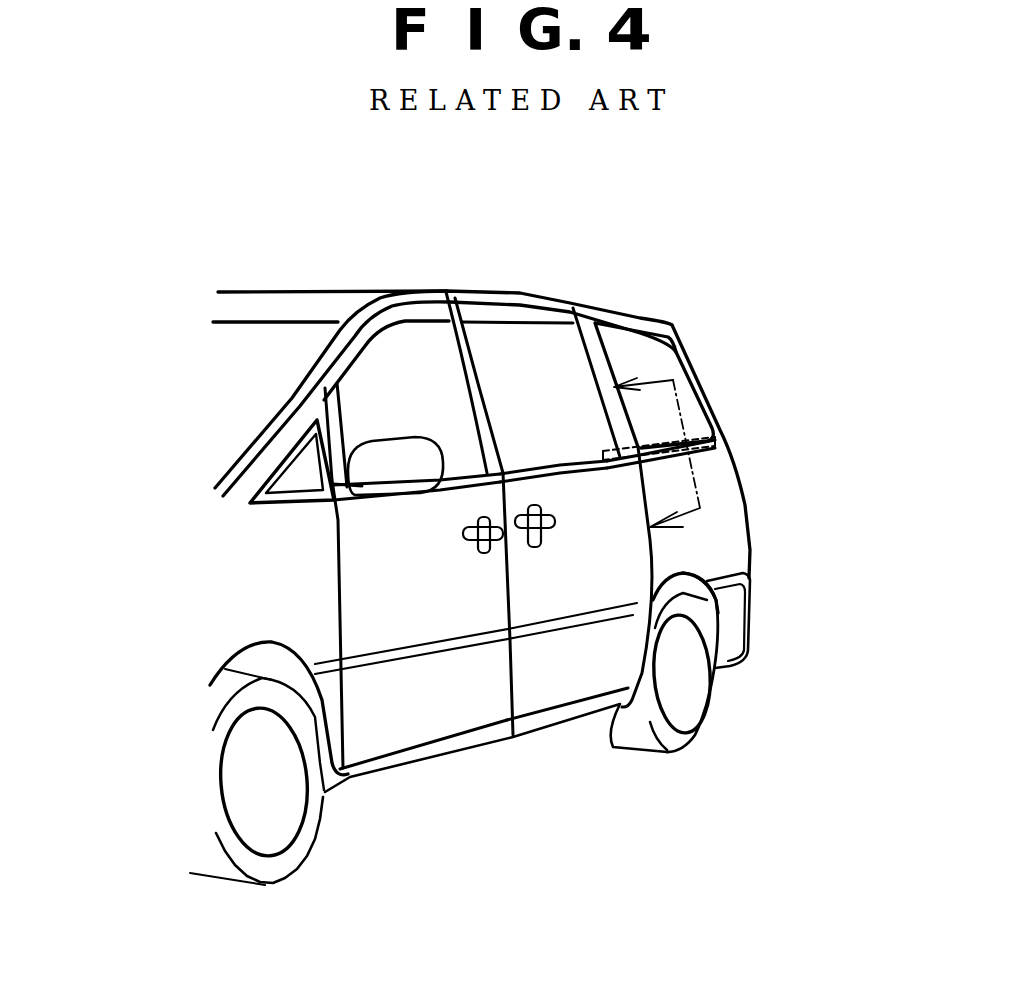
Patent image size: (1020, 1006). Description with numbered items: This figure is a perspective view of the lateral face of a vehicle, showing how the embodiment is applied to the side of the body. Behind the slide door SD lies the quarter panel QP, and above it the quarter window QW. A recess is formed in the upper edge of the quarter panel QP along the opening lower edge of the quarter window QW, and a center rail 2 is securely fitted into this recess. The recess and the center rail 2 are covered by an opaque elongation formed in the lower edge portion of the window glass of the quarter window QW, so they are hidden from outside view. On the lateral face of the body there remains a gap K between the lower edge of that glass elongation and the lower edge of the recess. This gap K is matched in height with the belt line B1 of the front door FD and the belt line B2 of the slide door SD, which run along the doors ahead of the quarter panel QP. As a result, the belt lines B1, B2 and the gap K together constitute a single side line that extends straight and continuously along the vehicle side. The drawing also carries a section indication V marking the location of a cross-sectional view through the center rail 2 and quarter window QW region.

The belt line B1 is at (467, 487).
The belt line B2 is at (540, 463).
The quarter window QW is at (688, 397).
The center rail 2 is at (680, 436).
The gap K is at (690, 444).
The quarter panel QP is at (720, 510).
The front door FD is at (437, 687).
The slide door SD is at (553, 663).
The section line V- V is at (634, 466).